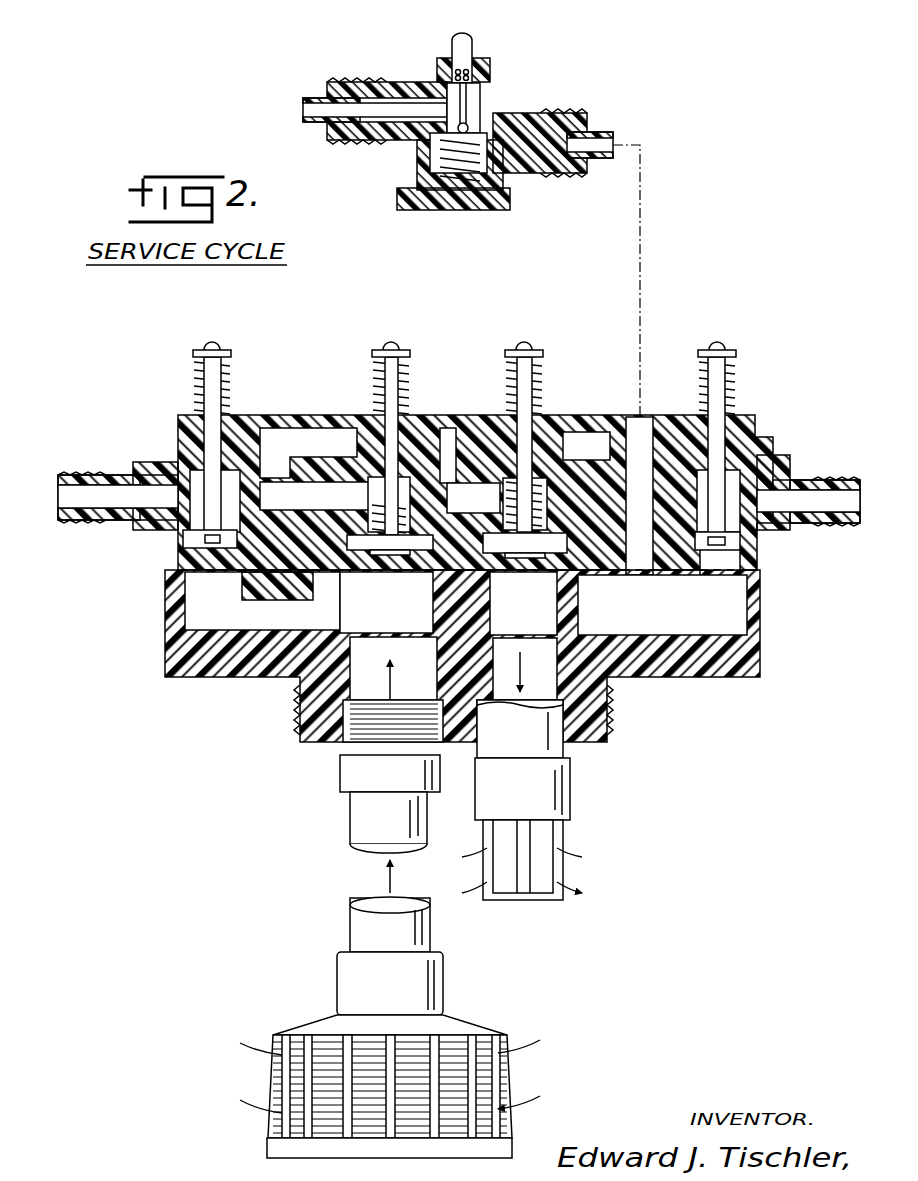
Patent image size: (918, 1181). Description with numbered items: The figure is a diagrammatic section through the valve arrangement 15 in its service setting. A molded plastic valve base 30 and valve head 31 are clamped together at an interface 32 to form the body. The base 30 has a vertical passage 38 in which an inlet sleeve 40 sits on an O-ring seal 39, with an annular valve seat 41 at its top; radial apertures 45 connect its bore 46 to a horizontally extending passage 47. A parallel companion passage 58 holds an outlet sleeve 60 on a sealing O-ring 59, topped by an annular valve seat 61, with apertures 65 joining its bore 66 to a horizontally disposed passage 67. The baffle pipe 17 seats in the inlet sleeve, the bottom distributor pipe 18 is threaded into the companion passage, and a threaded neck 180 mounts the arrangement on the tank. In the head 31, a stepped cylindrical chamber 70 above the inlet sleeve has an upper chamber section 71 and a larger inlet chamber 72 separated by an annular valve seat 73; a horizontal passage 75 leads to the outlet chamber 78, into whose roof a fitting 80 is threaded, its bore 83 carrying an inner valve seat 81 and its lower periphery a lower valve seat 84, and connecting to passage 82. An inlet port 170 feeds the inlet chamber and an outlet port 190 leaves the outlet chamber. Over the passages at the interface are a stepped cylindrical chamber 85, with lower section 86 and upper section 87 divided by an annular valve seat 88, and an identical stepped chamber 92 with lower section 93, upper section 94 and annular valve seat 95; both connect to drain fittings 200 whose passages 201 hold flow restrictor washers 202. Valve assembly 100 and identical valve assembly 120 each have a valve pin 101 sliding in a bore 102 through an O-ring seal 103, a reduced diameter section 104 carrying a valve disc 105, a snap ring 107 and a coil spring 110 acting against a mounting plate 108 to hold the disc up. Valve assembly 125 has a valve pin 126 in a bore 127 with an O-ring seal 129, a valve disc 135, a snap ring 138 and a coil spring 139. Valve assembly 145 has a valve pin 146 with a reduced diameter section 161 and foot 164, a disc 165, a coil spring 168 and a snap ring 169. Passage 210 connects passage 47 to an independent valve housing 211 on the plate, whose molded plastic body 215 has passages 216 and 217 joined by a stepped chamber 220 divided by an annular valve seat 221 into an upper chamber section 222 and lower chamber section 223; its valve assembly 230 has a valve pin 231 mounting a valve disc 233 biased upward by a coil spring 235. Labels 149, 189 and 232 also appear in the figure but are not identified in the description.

The valve arrangement 15 is at (680, 682).
The baffle pipe 17 is at (572, 805).
The bottom distributor pipe 18 is at (470, 1033).
The valve base 30 is at (735, 682).
The valve head 31 is at (768, 440).
The interface 32 is at (176, 570).
The passage 38 is at (570, 746).
The O-ring seal 39 is at (660, 590).
The inlet sleeve 40 is at (606, 702).
The annular valve seat 41 is at (566, 576).
The radially disposed apertures 45 is at (535, 659).
The bore 46 is at (566, 600).
The horizontally extending passage 47 is at (765, 640).
The companion passage 58 is at (336, 702).
The sealing O-ring 59 is at (310, 642).
The outlet sleeve 60 is at (337, 757).
The annular valve seat 61 is at (318, 596).
The apertures 65 is at (375, 645).
The bore 66 is at (441, 742).
The horizontally disposed passage 67 is at (207, 650).
The stepped cylindrical chamber 70 is at (573, 456).
The upper chamber section 71 is at (478, 440).
The inlet chamber 72 is at (630, 590).
The annular valve seat 73 is at (500, 540).
The horizontal passage 75 is at (450, 436).
The outlet chamber 78 is at (341, 526).
The fitting 80 is at (378, 508).
The inner valve seat 81 is at (411, 406).
The passage 82 is at (275, 435).
The bore 83 is at (405, 565).
The lower valve seat 84 is at (385, 560).
The stepped cylindrical chamber 85 is at (693, 440).
The lower section 86 is at (762, 620).
The upper section 87 is at (780, 478).
The annular valve seat 88 is at (780, 585).
The stepped chamber 92 is at (178, 612).
The lower section 93 is at (182, 546).
The upper section 94 is at (190, 476).
The annular valve seat 95 is at (170, 590).
The valve assembly 100 is at (745, 366).
The valve pin 101 is at (214, 343).
The bore 102 is at (221, 406).
The O-ring seal 103 is at (190, 410).
The reduced diameter section 104 is at (775, 458).
The valve disc 105 is at (216, 550).
The snap ring 107 is at (233, 352).
The mounting plate 108 is at (183, 425).
The coil spring 110 is at (226, 372).
The valve assembly 120 is at (208, 340).
The valve assembly 125 is at (392, 340).
The valve pin 126 is at (394, 348).
The bore 127 is at (536, 396).
The O-ring seal 129 is at (368, 430).
The valve disc 135 is at (308, 522).
The snap ring 138 is at (401, 385).
The coil spring 139 is at (376, 395).
The valve assembly 145 is at (521, 342).
The valve pin 146 is at (528, 350).
The spring 149 is at (548, 430).
The reduced diameter section 161 is at (572, 440).
The foot 164 is at (535, 560).
The disc 165 is at (538, 600).
The coil spring 168 is at (512, 450).
The snap ring 169 is at (510, 368).
The inlet port 170 is at (666, 590).
The threaded neck 180 is at (340, 730).
The spring 189 is at (541, 380).
The outlet port 190 is at (283, 596).
The drain fittings 200 is at (790, 546).
The passages 201 is at (862, 492).
The flow restrictor washers 202 is at (122, 515).
The passage 210 is at (641, 430).
The independent valve housing 211 is at (556, 106).
The molded plastic body 215 is at (372, 88).
The passage 216 is at (598, 145).
The passage 217 is at (306, 110).
The stepped chamber 220 is at (470, 112).
The annular valve seat 221 is at (452, 140).
The upper chamber section 222 is at (455, 104).
The lower chamber section 223 is at (505, 188).
The valve assembly 230 is at (480, 46).
The valve pin 231 is at (462, 34).
The spring 232 is at (470, 76).
The valve disc 233 is at (462, 162).
The coil spring 235 is at (452, 210).